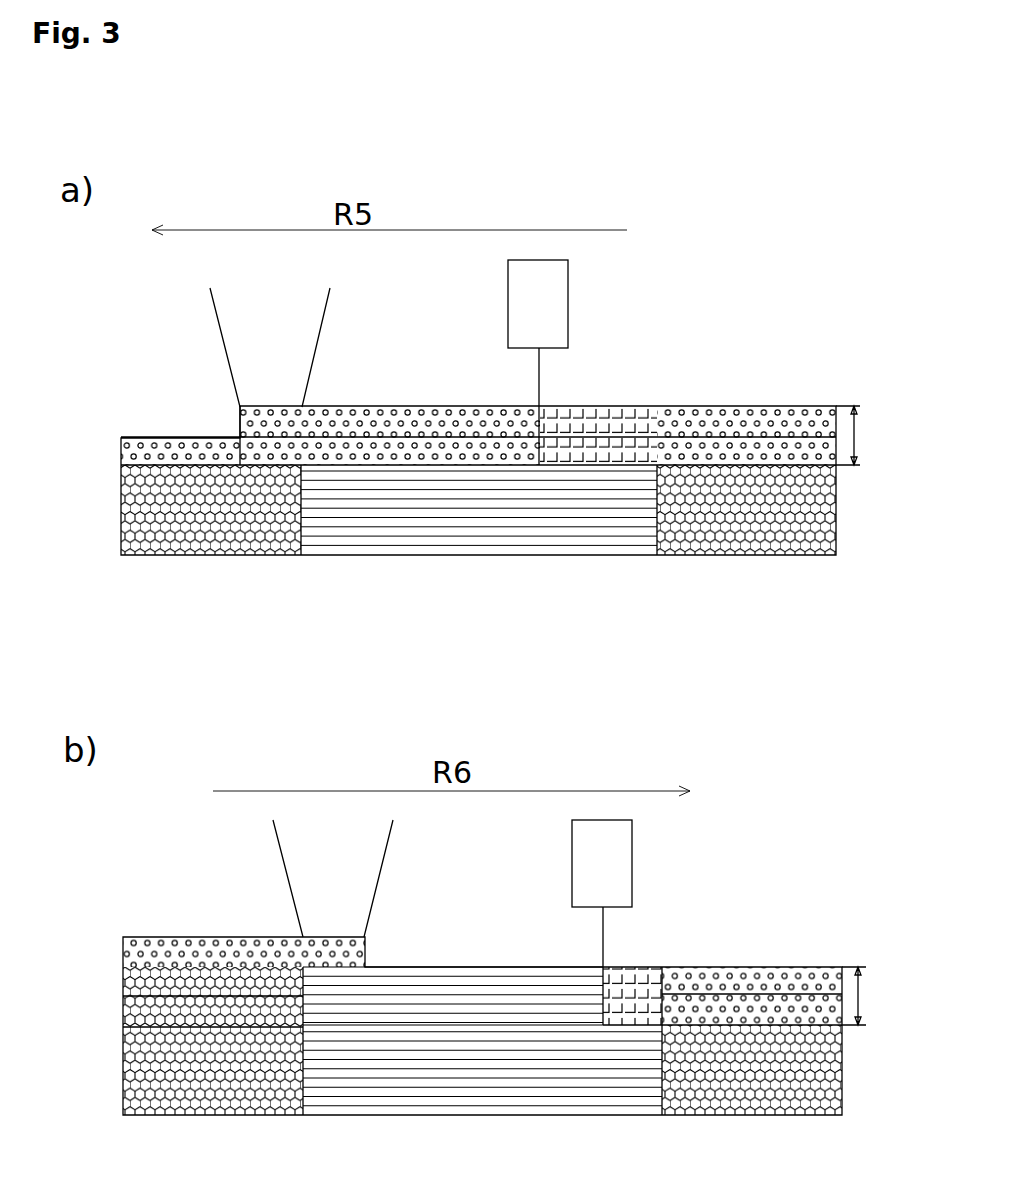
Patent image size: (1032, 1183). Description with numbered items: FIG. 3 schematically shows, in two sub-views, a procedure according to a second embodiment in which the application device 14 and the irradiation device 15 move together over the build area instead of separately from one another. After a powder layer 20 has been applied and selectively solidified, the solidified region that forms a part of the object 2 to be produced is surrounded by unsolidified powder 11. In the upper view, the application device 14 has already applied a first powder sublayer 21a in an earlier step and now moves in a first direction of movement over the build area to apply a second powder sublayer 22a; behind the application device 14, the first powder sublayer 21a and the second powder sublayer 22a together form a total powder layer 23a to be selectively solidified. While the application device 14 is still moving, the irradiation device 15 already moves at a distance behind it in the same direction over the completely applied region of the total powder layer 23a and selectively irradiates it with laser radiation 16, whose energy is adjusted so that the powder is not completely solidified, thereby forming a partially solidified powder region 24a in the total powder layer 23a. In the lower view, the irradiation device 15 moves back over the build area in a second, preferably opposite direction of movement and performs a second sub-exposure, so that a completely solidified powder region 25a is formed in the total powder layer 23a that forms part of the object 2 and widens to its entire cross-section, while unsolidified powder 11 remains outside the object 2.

The object 2 is at (467, 523).
The unsolidified powder 11 is at (177, 538).
The application device 14 is at (301, 612).
The irradiation device 15 is at (585, 642).
The laser radiation 16 is at (535, 388).
The powder layer 20 is at (142, 497).
The first powder sublayer 21a is at (223, 443).
The second powder sublayer 22a is at (320, 407).
The total powder layer 23a is at (180, 897).
The partially solidified powder region 24a is at (645, 408).
The completely solidified powder region 25a is at (383, 970).